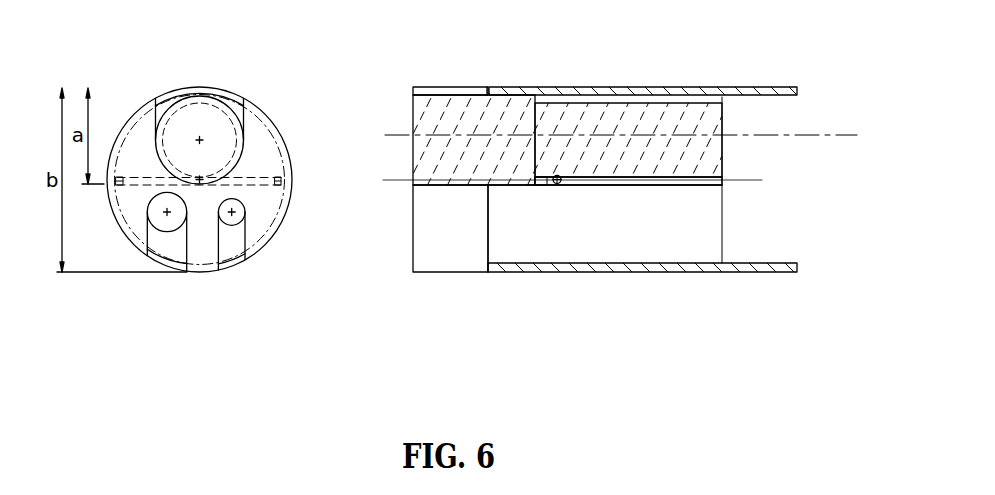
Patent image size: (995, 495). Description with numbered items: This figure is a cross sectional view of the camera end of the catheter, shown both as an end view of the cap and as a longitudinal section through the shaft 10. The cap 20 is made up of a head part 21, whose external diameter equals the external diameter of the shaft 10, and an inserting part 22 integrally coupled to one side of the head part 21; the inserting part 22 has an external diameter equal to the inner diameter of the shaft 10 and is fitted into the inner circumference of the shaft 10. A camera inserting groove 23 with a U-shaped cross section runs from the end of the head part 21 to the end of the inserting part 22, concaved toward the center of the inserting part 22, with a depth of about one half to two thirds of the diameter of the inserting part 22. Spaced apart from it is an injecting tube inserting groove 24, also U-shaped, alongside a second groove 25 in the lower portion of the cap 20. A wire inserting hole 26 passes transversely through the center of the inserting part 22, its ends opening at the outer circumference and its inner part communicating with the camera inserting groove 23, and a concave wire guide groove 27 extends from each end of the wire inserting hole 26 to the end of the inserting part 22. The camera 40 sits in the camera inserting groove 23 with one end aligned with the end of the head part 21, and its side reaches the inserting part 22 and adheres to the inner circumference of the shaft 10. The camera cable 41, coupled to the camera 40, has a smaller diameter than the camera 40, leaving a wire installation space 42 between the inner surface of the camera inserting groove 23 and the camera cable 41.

The shaft 10 is at (753, 92).
The cap 20 is at (567, 240).
The head part 21 is at (440, 273).
The inserting part 22 is at (508, 252).
The camera inserting groove 23 is at (238, 110).
The injecting tube inserting groove 24 is at (168, 229).
The lower roller 25 is at (232, 230).
The wire inserting hole 26 is at (263, 168).
The wire guide groove 27 is at (281, 181).
The camera 40 is at (492, 110).
The camera cable 41 is at (577, 123).
The wire installation space 42 is at (543, 182).